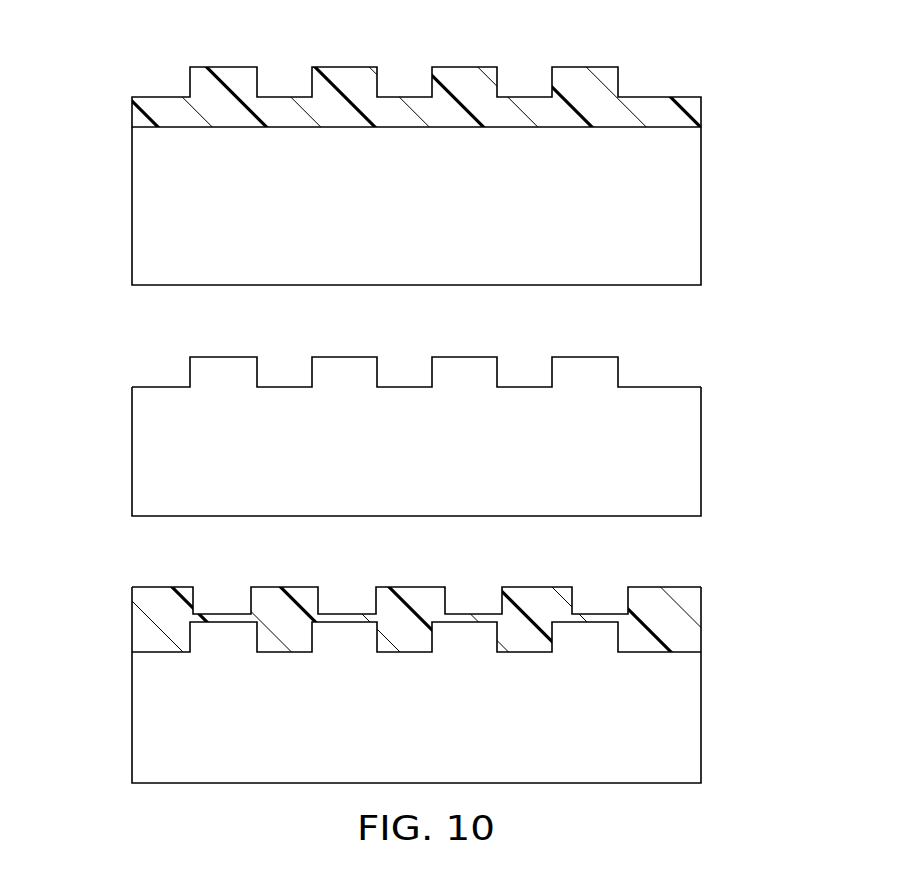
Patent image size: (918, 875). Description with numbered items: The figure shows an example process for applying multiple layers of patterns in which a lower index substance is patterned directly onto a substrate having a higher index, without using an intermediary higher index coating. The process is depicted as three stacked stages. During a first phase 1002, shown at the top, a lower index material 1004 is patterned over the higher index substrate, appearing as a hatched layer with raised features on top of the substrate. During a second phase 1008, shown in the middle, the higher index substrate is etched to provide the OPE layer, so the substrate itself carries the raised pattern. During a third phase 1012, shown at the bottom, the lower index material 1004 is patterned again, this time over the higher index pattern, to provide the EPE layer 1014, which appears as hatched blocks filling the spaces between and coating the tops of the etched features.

The first phase 1002 is at (112, 64).
The lower index material 1004 is at (692, 105).
The second phase 1008 is at (112, 352).
The third phase 1012 is at (112, 584).
The EPE layer 1014 is at (693, 603).